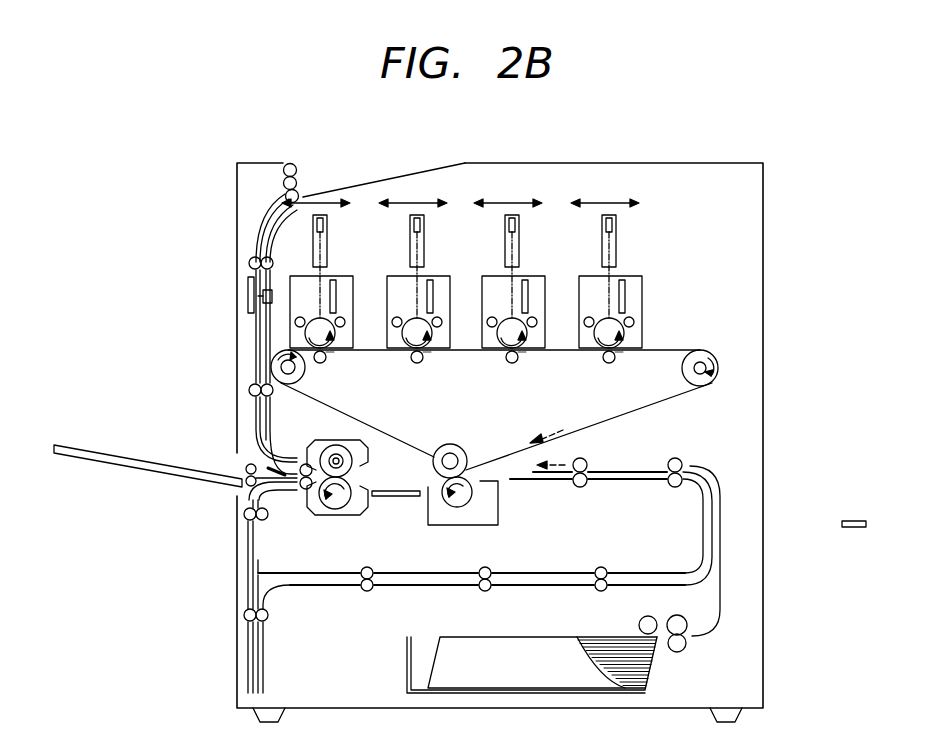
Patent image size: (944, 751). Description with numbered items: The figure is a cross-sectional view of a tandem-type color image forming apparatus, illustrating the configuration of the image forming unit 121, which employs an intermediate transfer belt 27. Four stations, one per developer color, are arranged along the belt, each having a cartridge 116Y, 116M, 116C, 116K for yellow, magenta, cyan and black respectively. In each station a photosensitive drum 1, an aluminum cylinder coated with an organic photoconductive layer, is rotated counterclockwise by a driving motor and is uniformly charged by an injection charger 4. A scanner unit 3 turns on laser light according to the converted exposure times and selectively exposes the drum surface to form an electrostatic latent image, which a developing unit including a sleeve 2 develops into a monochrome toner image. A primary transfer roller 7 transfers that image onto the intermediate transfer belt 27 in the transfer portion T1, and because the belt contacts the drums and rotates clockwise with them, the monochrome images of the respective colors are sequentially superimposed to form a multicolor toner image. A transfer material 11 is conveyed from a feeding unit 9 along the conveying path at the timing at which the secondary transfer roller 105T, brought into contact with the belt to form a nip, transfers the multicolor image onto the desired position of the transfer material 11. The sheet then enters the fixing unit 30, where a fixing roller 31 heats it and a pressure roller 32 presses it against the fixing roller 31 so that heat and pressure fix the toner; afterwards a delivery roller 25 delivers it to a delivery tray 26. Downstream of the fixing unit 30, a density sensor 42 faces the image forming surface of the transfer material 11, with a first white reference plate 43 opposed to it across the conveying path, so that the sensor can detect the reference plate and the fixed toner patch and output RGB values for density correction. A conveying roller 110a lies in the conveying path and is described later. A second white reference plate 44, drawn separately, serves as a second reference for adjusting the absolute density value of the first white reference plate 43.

The photosensitive drum 1 is at (314, 320).
The sleeve 2 is at (290, 337).
The scanner unit 3 is at (313, 229).
The injection charger 4 is at (336, 318).
The primary transfer roller 7 is at (319, 364).
The transfer portion T1 is at (330, 355).
The feeding unit 9 is at (655, 668).
The transfer material 11 is at (598, 637).
The delivery roller 25 is at (297, 182).
The delivery tray 26 is at (372, 182).
The intermediate transfer belt 27 is at (588, 428).
The fixing unit 30 is at (312, 445).
The fixing roller 31 is at (342, 447).
The pressure roller 32 is at (333, 509).
The density sensor 42 is at (270, 290).
The first white reference plate 43 is at (247, 298).
The second white reference plate 44 is at (840, 524).
The secondary transfer roller 105T is at (438, 524).
The conveying roller 110a is at (249, 258).
The cartridge 116Y is at (343, 276).
The cartridge 116M is at (440, 276).
The cartridge 116C is at (535, 276).
The cartridge 116K is at (632, 276).
The image forming unit 121 is at (763, 463).